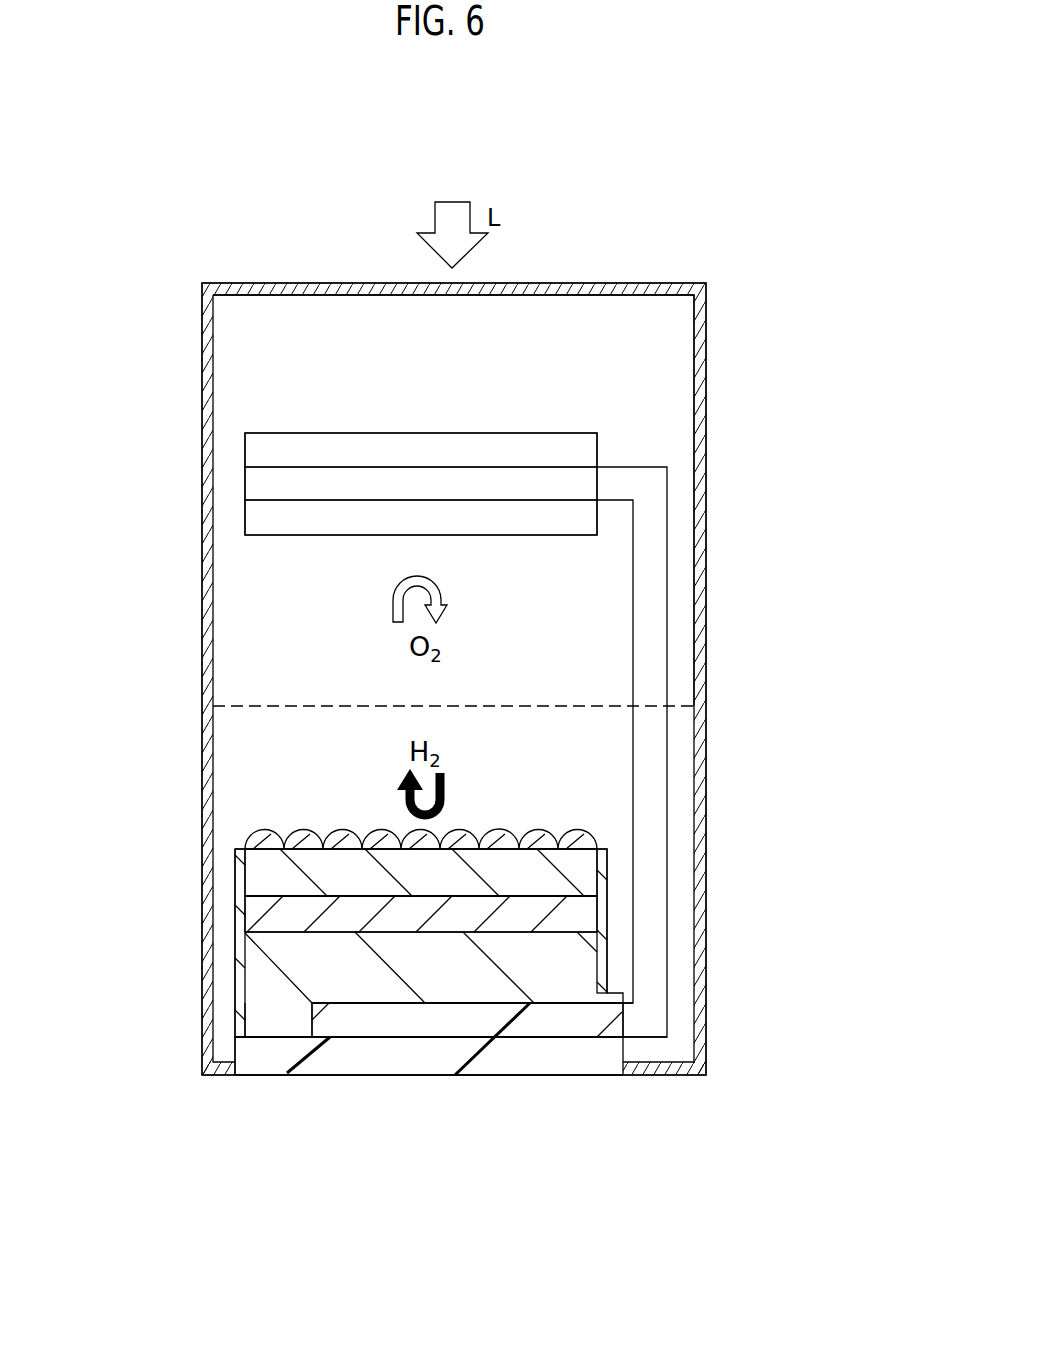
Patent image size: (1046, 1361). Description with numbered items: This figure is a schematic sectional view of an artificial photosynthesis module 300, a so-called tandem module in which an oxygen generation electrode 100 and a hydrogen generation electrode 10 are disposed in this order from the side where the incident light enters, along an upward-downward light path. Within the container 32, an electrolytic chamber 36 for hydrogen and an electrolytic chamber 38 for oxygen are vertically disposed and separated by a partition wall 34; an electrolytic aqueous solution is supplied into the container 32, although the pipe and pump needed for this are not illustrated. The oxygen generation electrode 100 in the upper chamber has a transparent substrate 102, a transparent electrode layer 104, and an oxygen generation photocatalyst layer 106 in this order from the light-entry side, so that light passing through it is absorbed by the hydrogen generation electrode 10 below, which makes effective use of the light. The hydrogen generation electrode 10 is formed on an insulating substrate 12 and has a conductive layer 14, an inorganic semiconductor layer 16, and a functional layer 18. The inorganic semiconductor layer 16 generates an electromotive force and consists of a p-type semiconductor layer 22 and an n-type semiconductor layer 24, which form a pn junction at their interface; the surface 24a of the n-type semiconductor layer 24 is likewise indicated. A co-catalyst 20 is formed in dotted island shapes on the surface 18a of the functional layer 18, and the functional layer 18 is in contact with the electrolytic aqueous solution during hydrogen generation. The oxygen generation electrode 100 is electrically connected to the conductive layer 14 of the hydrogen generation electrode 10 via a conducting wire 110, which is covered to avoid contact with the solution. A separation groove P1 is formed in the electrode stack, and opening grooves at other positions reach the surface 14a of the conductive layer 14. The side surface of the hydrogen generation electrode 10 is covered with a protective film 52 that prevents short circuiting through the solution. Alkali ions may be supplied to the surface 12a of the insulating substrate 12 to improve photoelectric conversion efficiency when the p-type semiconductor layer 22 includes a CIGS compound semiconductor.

The artificial photosynthesis module 300 is at (643, 183).
The container 32 is at (695, 283).
The electrolytic chamber for oxygen 38 is at (665, 360).
The oxygen generation electrode 100 is at (250, 381).
The transparent substrate 102 is at (421, 450).
The transparent electrode layer 104 is at (421, 483).
The oxygen generation photocatalyst layer 106 is at (421, 517).
The conducting wire 110 is at (655, 633).
The electrolytic chamber for hydrogen 36 is at (618, 820).
The partition wall 34 is at (263, 706).
The hydrogen generation electrode 10 is at (247, 766).
The co-catalyst 20 is at (258, 838).
The surface of the functional layer 18a is at (586, 846).
The functional layer 18 is at (258, 878).
The surface of the n-type semiconductor layer 24a is at (310, 894).
The n-type semiconductor layer 24 is at (553, 925).
The p-type semiconductor layer 22 is at (500, 985).
The inorganic semiconductor layer 16 is at (587, 1124).
The protective film 52 is at (240, 985).
The separation groove P1 is at (278, 1018).
The conductive layer 14 is at (333, 1037).
The surface of the conductive layer 14a is at (373, 1007).
The insulating substrate 12 is at (390, 1062).
The surface of the insulating substrate 12a is at (452, 1047).